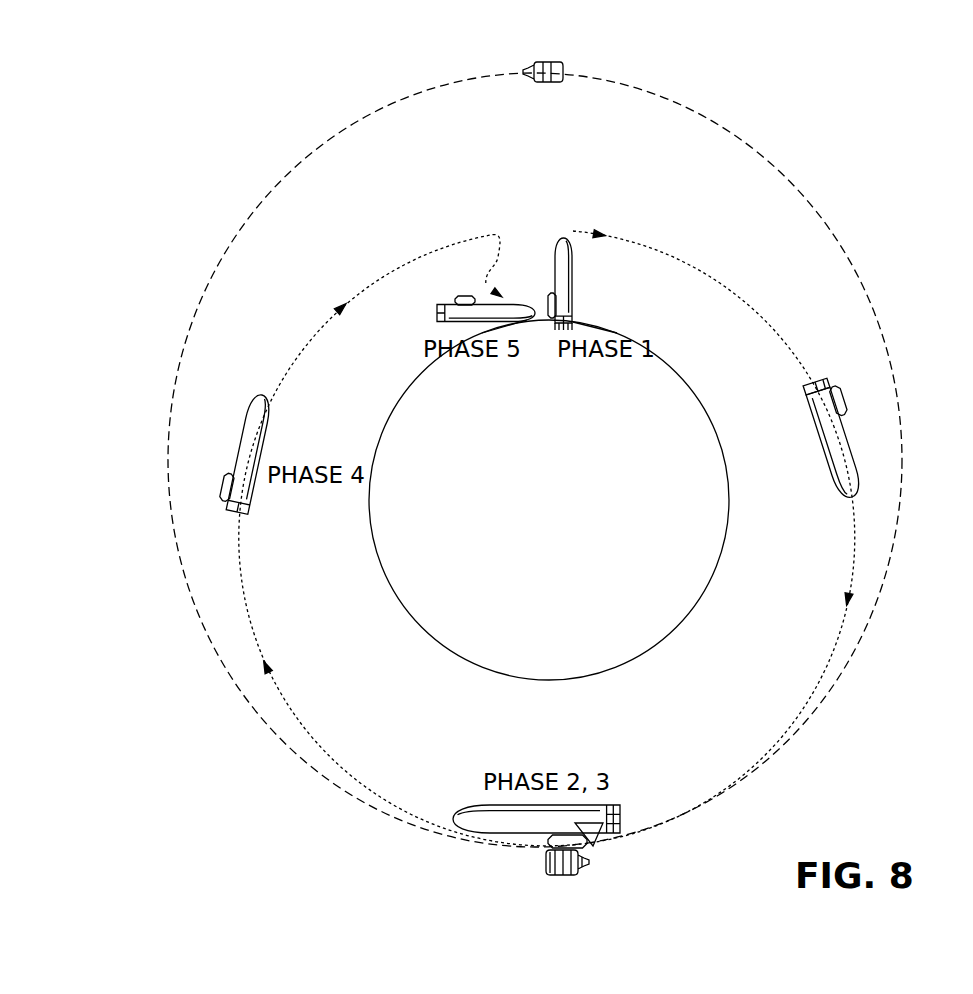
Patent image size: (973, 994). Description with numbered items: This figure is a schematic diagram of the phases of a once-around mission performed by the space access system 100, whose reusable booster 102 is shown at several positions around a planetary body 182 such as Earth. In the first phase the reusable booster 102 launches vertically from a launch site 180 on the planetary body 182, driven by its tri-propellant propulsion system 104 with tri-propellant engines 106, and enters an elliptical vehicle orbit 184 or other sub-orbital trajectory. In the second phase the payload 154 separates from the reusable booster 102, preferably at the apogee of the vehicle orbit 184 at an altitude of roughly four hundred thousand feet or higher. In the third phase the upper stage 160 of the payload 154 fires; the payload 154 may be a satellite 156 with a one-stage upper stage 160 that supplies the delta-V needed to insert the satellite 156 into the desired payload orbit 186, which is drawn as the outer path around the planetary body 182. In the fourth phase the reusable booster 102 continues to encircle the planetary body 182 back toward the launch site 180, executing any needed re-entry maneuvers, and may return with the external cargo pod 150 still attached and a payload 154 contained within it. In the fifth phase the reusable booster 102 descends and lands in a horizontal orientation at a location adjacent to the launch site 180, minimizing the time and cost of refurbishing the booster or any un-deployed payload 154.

The space access system 100 is at (558, 237).
The reusable booster 102 is at (577, 286).
The tri-propellant propulsion system 104 is at (812, 378).
The tri-propellant engines 106 is at (825, 381).
The external cargo pod 150 is at (852, 411).
The payload 154 is at (550, 870).
The satellite 156 is at (567, 70).
The upper stage 160 is at (587, 862).
The launch site 180 is at (538, 303).
The planetary body 182 is at (570, 511).
The vehicle orbit 184 is at (330, 762).
The payload orbit 186 is at (297, 752).